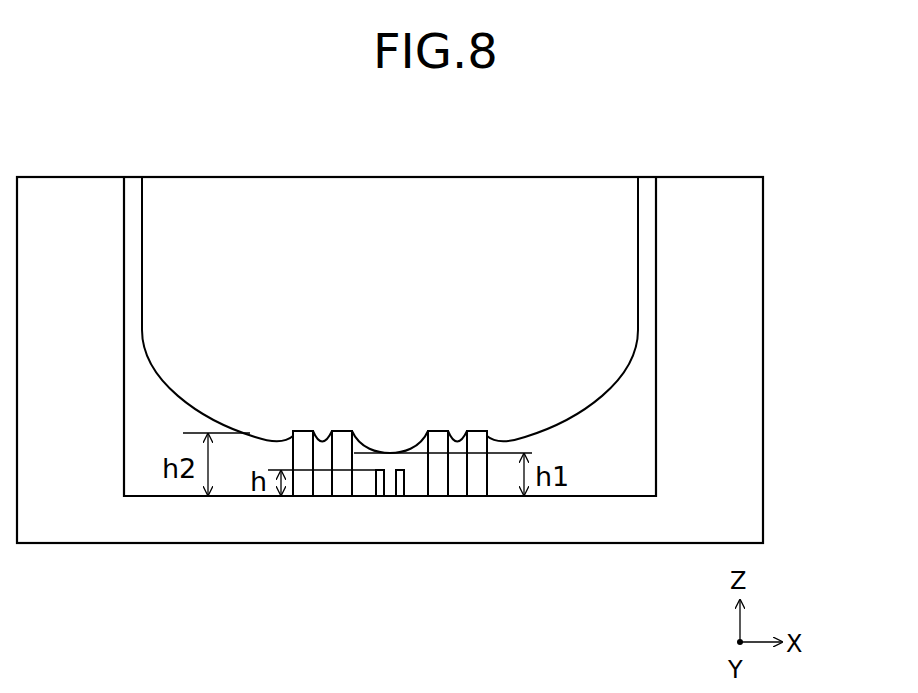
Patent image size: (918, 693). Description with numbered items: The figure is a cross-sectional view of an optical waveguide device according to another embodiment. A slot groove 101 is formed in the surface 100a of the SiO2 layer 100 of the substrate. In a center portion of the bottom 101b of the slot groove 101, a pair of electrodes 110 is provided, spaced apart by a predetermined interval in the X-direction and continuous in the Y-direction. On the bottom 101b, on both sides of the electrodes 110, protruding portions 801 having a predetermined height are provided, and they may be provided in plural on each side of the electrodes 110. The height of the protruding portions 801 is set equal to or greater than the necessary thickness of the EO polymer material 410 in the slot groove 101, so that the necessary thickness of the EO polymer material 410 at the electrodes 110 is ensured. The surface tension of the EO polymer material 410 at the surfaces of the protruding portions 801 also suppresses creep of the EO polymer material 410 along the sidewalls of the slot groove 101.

The SiO2 layer 100 is at (748, 285).
The surface of the SiO2 layer 100a is at (707, 178).
The slot groove 101 is at (505, 160).
The bottom of the slot groove 101b is at (417, 497).
The electrodes 110 is at (380, 470).
The protruding portions 801 is at (337, 437).
The EO polymer material 410 is at (600, 470).